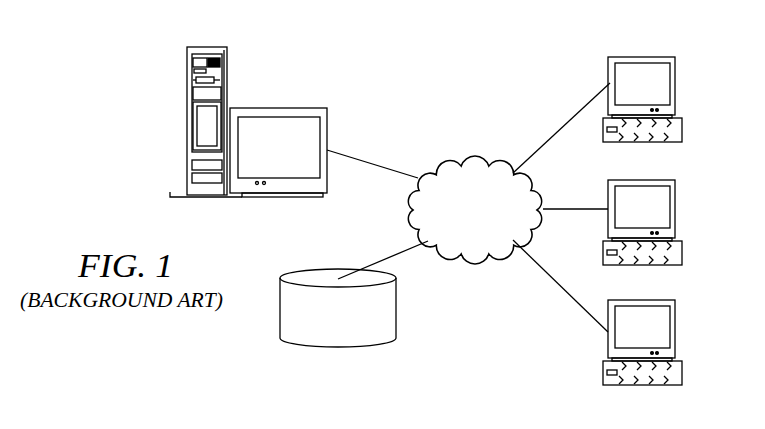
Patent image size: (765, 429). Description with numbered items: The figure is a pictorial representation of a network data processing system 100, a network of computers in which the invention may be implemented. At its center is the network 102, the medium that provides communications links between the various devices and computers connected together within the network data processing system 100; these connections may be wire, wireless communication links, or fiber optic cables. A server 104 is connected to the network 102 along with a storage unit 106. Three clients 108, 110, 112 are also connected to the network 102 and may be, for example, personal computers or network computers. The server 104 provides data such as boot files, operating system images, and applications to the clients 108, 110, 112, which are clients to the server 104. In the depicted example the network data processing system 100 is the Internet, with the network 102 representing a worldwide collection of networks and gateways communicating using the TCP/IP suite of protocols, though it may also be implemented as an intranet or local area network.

The network data processing system 100 is at (522, 75).
The network 102 is at (450, 162).
The server 104 is at (186, 121).
The storage unit 106 is at (330, 348).
The client 108 is at (675, 85).
The client 110 is at (675, 208).
The client 112 is at (675, 330).